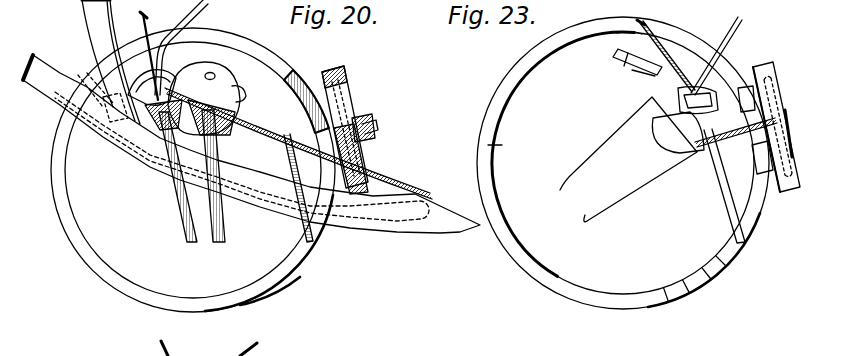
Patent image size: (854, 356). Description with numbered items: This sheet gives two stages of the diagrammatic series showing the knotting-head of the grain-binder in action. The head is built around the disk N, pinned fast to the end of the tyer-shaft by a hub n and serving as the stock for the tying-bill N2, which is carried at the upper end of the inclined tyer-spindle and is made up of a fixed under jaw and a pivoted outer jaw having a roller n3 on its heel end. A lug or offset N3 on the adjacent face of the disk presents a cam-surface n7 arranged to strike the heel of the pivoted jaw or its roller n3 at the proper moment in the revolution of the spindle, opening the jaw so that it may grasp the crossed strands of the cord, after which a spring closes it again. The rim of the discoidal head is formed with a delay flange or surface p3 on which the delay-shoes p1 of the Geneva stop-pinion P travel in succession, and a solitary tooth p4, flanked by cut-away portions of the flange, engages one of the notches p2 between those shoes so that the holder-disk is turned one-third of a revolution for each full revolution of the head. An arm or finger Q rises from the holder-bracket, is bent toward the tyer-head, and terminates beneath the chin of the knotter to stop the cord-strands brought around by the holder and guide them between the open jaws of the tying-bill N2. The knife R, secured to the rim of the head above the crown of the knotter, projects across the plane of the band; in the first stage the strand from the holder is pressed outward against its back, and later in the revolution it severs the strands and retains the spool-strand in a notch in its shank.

In FIG. 20, the disk N is at (193, 170).
In FIG. 23, the disk N is at (625, 163).
In FIG. 20, the tying-bill N2 is at (207, 98).
In FIG. 23, the tying-bill N2 is at (714, 120).
In FIG. 20, the lug or offset N3 is at (131, 86).
In FIG. 23, the lug or offset N3 is at (620, 62).
In FIG. 20, the hub n is at (251, 121).
In FIG. 23, the hub n is at (628, 159).
In FIG. 20, the roller n3 is at (250, 100).
In FIG. 23, the cam-surface n7 is at (640, 74).
In FIG. 23, the delay-shoes p1 is at (750, 103).
In FIG. 23, the notches p2 is at (757, 135).
In FIG. 20, the delay flange or surface p3 is at (270, 290).
In FIG. 23, the delay flange or surface p3 is at (506, 145).
In FIG. 20, the solitary tooth p4 is at (307, 97).
In FIG. 23, the solitary tooth p4 is at (716, 267).
In FIG. 20, the Geneva stop-pinion P is at (350, 130).
In FIG. 23, the Geneva stop-pinion P is at (767, 190).
In FIG. 20, the arm or finger Q is at (299, 228).
In FIG. 23, the arm or finger Q is at (724, 186).
In FIG. 20, the knife R is at (212, 35).
In FIG. 23, the knife R is at (697, 45).